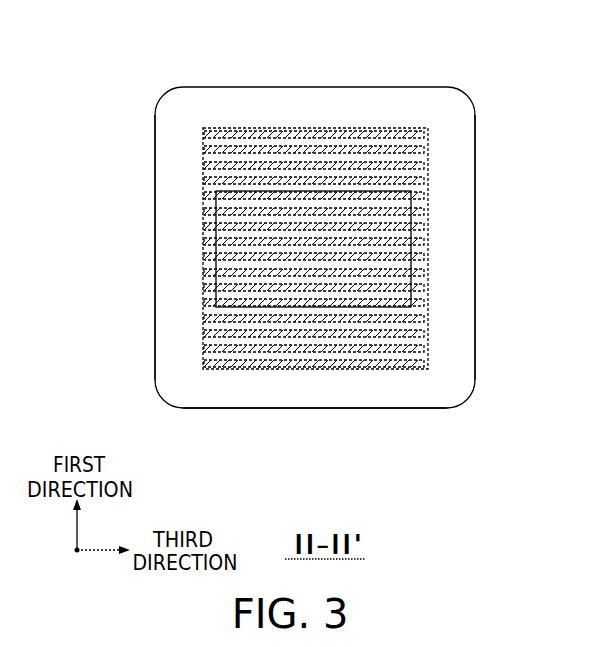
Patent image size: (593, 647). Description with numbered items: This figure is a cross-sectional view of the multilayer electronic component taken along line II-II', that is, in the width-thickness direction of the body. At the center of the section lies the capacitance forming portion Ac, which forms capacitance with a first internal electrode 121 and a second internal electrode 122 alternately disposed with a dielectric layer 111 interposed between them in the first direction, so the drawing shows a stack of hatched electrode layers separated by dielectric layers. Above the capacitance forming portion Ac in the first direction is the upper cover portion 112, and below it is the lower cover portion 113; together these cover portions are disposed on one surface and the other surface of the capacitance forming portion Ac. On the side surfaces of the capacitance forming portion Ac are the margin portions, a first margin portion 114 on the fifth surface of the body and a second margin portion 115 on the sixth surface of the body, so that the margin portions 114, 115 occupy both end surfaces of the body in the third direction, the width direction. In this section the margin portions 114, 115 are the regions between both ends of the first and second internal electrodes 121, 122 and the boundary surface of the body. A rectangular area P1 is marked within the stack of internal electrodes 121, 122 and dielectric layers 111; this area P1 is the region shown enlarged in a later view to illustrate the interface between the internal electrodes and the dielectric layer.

The dielectric layer 111 is at (247, 160).
The upper cover portion 112 is at (307, 102).
The lower cover portion 113 is at (298, 408).
The first margin portion 114 is at (163, 230).
The second margin portion 115 is at (467, 230).
The first internal electrode 121 is at (377, 132).
The second internal electrode 122 is at (397, 150).
The area P1 is at (420, 260).
The capacitance forming portion Ac is at (436, 310).